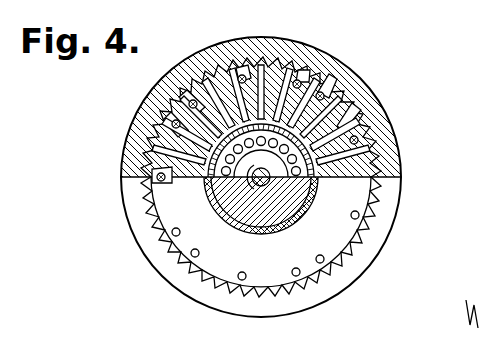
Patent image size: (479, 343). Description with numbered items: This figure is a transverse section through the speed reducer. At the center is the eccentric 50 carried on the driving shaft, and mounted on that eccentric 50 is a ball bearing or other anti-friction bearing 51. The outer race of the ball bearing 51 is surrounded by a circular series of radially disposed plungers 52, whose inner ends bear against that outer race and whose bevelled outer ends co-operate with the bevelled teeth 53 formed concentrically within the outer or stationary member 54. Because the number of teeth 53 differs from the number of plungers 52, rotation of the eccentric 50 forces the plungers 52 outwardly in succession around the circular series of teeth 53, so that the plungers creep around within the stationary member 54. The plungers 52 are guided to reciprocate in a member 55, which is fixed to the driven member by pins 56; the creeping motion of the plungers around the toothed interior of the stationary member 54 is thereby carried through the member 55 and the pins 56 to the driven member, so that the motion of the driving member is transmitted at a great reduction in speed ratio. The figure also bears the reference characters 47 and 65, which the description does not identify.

The housing 47 is at (271, 177).
The eccentric 50 is at (259, 205).
The ball bearing 51 is at (312, 182).
The plungers 52 is at (152, 149).
The teeth 53 is at (257, 57).
The stationary member 54 is at (346, 82).
The member 55 is at (277, 63).
The pins 56 is at (301, 80).
The bearing ring 65 is at (286, 205).